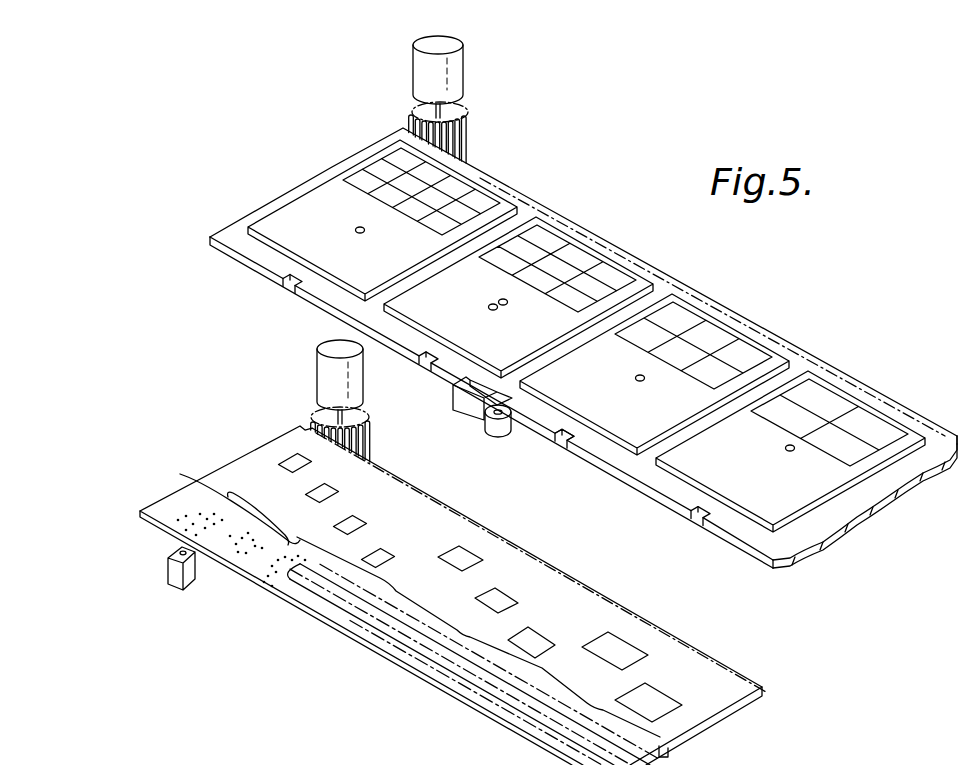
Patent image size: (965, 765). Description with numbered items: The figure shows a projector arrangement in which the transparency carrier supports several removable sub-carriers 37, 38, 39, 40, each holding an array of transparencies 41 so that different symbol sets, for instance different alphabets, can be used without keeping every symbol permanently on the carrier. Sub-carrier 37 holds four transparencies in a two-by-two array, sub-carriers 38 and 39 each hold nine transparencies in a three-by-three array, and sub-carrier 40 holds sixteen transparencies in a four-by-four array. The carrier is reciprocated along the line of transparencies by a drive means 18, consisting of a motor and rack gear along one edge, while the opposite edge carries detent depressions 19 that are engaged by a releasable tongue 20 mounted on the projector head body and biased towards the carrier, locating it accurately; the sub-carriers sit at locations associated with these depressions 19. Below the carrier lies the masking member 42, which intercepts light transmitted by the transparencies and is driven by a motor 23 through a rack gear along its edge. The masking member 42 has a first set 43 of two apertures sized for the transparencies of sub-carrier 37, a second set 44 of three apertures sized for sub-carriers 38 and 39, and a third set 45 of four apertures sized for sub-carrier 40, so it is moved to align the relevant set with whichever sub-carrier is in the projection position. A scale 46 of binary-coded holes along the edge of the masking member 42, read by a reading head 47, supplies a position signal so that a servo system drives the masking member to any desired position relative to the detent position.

The drive means 18 is at (452, 90).
The depressions 19 is at (562, 436).
The releasable tongue 20 is at (473, 407).
The motor 23 is at (322, 372).
The sub-carrier 37 is at (720, 472).
The sub-carrier 38 is at (633, 428).
The sub-carrier 39 is at (413, 308).
The sub-carrier 40 is at (302, 238).
The key matrix 41 is at (582, 255).
The masking member 42 is at (727, 716).
The first set of apertures 43 is at (527, 730).
The second set of apertures 44 is at (457, 635).
The third set of apertures 45 is at (183, 476).
The scale 46 is at (283, 573).
The reading head 47 is at (192, 566).